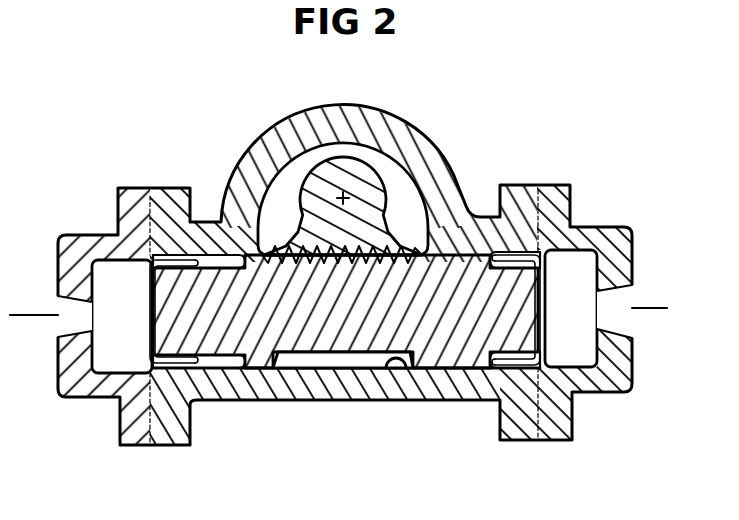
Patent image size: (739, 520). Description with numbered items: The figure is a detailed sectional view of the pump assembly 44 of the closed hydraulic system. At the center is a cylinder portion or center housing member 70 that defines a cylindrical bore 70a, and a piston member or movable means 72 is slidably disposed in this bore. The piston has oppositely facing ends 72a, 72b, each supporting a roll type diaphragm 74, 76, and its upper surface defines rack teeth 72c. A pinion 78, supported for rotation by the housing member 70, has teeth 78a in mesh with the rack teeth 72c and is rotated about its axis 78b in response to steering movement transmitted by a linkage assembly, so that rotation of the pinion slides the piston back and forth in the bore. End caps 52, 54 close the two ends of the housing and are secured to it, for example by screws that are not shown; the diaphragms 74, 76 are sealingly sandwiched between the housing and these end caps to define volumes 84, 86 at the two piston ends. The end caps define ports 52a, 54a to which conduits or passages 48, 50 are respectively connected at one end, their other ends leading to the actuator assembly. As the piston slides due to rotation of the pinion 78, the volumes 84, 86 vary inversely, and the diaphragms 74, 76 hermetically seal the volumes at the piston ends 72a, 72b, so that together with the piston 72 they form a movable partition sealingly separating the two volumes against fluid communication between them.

The pump assembly 44 is at (160, 158).
The conduit or passage 48 is at (30, 316).
The conduit or passage 50 is at (655, 309).
The end cap 52 is at (82, 242).
The port 52a is at (58, 303).
The end cap 54 is at (592, 235).
The port 54a is at (640, 300).
The cylinder portion or center housing member 70 is at (350, 376).
The cylindrical bore 70a is at (398, 360).
The piston member or movable means 72 is at (298, 368).
The piston end 72a is at (163, 333).
The piston end 72b is at (525, 332).
The rack teeth 72c is at (462, 179).
The roll type diaphragm 74 is at (152, 268).
The roll type diaphragm 76 is at (536, 262).
The pinion 78 is at (357, 175).
The pinion teeth 78a is at (233, 159).
The pinion axis 78b is at (343, 196).
The volume 84 is at (112, 362).
The volume 86 is at (577, 358).